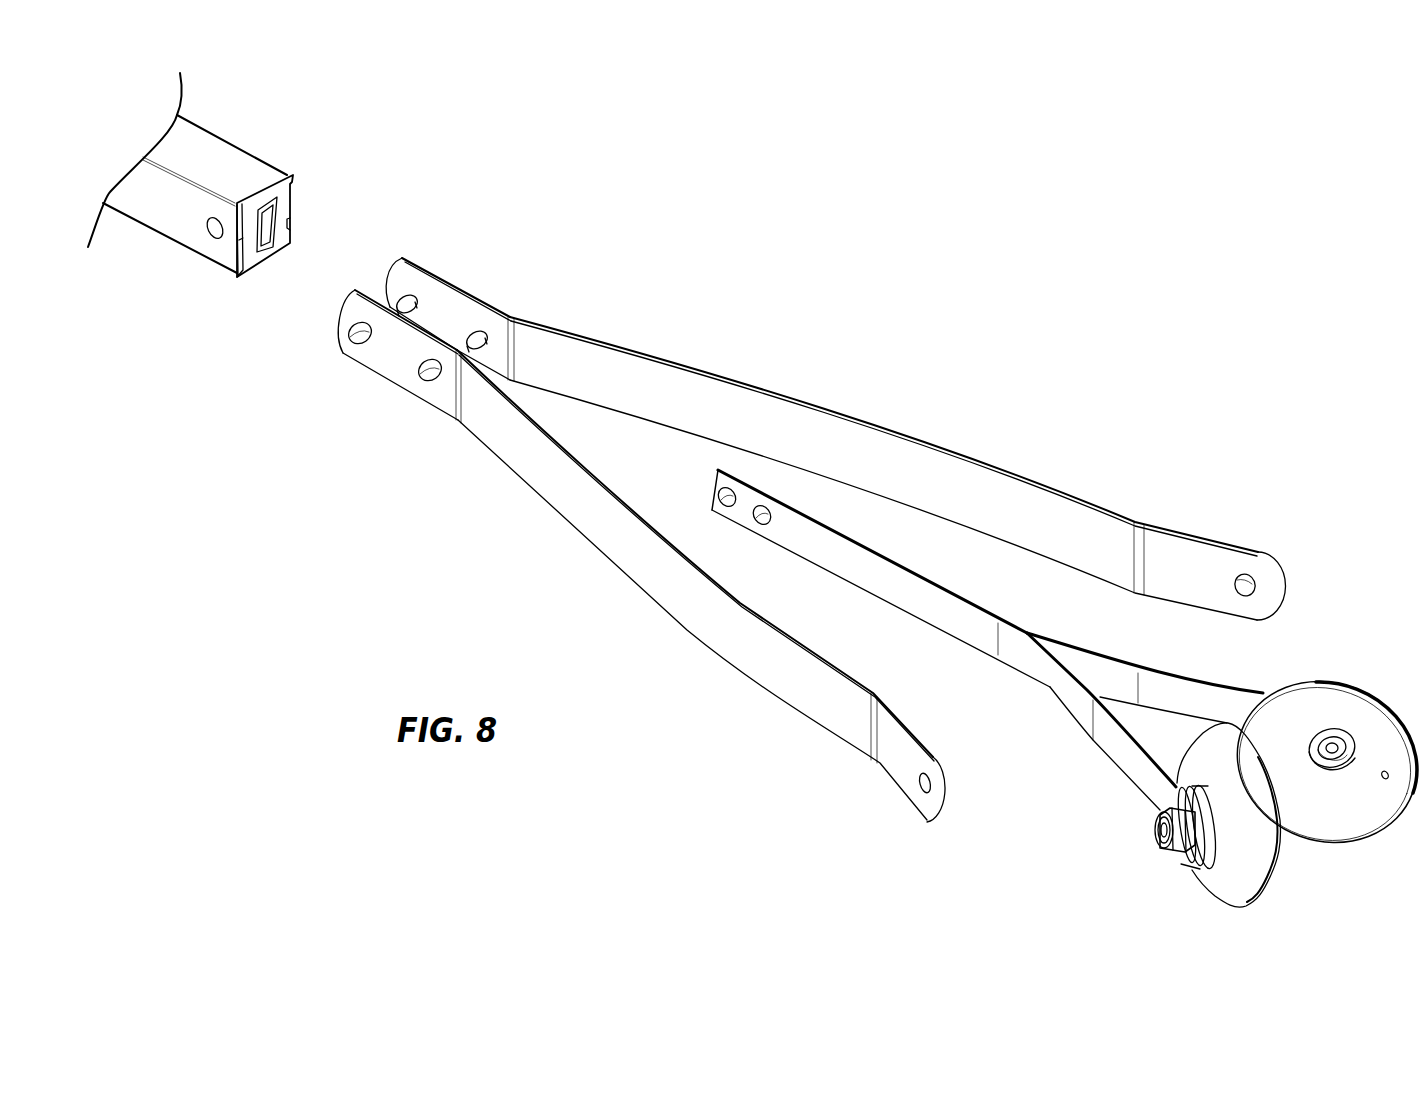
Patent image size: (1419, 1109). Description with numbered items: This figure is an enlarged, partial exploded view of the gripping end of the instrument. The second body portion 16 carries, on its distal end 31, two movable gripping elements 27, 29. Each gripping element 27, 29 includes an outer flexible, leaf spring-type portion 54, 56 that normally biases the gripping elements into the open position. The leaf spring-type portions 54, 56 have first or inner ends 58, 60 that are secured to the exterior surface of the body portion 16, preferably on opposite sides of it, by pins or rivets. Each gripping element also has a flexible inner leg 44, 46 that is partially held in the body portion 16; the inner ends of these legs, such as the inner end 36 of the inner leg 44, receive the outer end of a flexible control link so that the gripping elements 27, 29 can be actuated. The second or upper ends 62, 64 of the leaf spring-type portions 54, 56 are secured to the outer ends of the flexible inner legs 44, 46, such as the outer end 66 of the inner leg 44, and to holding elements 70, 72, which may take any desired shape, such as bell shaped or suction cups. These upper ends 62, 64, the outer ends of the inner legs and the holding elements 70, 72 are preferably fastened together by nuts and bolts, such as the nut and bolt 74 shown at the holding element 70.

The second body portion 16 is at (198, 134).
The distal end 31 is at (250, 165).
The first or inner end 60 is at (463, 283).
The outer flexible leaf spring-type portion 56 is at (880, 422).
The second or upper end 64 is at (1200, 567).
The first or inner end 58 is at (395, 358).
The outer flexible leaf spring-type portion 54 is at (575, 505).
The second or upper end 62 is at (907, 768).
The gripping element 27 is at (762, 687).
The gripping element 29 is at (1018, 432).
The inner end 36 is at (742, 512).
The flexible inner leg 44 is at (1058, 683).
The flexible inner leg 46 is at (1200, 680).
The holding element 72 is at (1340, 708).
The holding element 70 is at (1242, 877).
The outer end 66 is at (1193, 867).
The nut and bolt 74 is at (1158, 837).